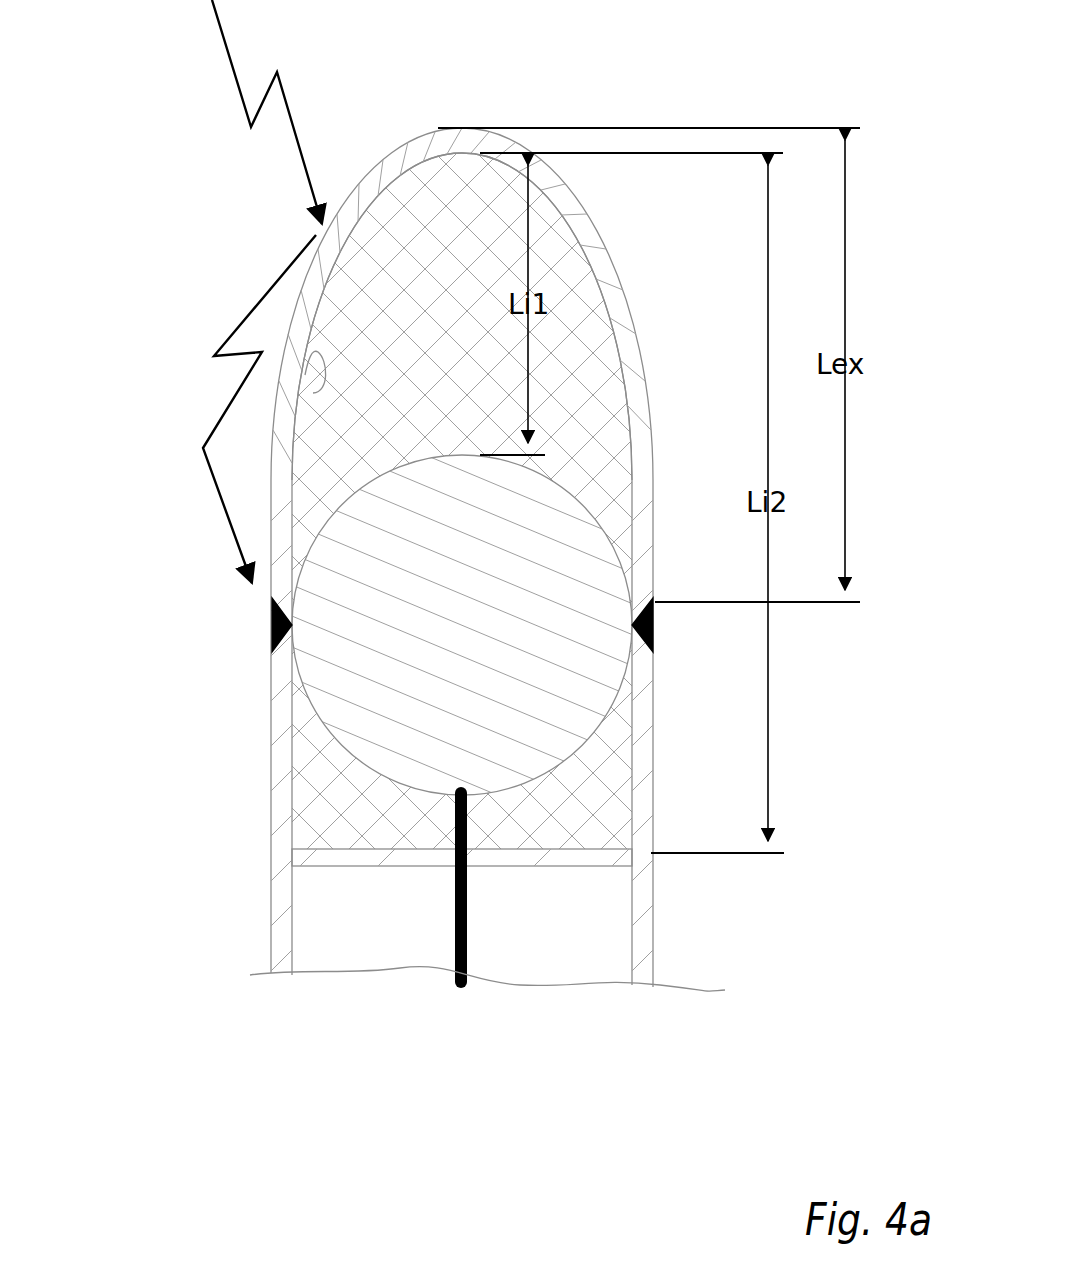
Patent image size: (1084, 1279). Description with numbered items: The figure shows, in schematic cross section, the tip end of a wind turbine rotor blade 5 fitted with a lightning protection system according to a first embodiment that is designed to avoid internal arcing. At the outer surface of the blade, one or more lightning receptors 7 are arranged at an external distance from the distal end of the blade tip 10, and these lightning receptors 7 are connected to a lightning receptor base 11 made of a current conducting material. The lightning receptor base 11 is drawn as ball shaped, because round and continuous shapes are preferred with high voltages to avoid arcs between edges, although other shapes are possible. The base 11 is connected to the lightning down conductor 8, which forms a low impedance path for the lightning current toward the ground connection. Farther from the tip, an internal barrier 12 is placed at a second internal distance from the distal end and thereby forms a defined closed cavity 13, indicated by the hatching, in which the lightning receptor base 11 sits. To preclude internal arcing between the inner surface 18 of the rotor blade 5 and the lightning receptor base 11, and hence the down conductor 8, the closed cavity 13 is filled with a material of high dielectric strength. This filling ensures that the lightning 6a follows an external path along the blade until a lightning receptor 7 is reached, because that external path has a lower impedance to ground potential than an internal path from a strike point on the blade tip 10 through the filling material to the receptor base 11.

The wind turbine rotor blade 5 is at (196, 960).
The lightning 6a is at (222, 27).
The lightning receptor 7 is at (271, 603).
The lightning down conductor 8 is at (455, 895).
The blade tip 10 is at (330, 250).
The lightning receptor base 11 is at (322, 724).
The internal barrier 12 is at (292, 852).
The closed cavity 13 is at (370, 315).
The inner surface 18 is at (313, 393).